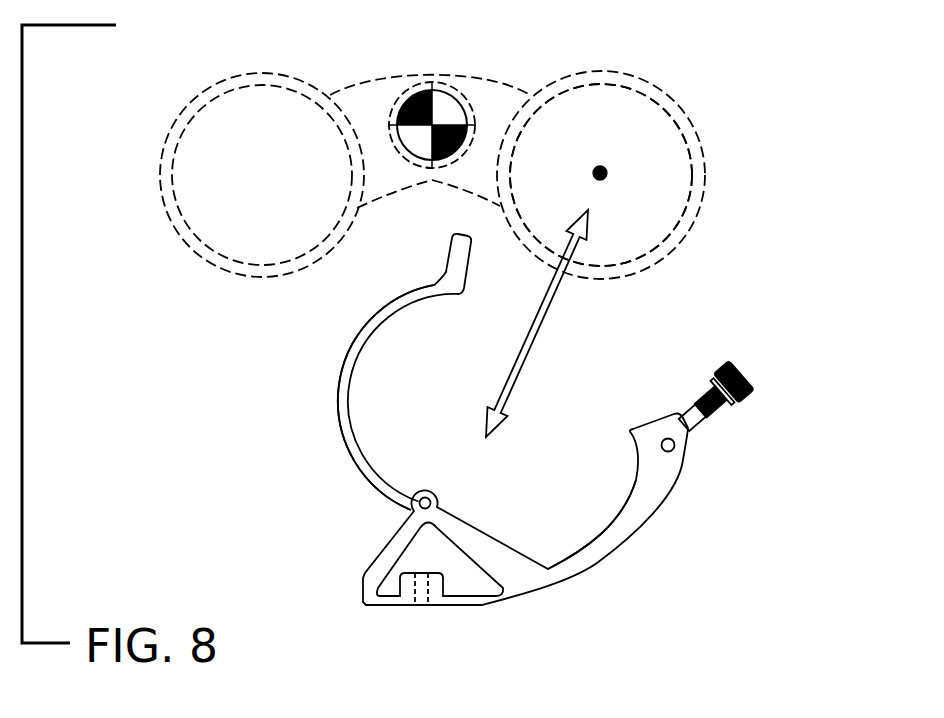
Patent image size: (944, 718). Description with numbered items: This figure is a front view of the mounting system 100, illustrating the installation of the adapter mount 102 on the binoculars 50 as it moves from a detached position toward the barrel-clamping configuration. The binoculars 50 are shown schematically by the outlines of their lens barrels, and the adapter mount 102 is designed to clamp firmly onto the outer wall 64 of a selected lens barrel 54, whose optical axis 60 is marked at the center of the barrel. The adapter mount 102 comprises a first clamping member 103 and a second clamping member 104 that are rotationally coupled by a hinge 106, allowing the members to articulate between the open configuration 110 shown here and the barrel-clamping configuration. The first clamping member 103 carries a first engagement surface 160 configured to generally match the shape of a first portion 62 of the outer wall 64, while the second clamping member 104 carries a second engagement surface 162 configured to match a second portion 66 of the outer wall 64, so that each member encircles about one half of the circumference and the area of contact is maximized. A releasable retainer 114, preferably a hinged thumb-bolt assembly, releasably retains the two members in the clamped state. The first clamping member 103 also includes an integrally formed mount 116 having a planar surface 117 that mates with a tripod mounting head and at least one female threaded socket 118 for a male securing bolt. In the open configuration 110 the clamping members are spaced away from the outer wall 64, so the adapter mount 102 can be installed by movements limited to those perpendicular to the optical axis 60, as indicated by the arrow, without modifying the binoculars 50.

The binoculars 50 is at (205, 90).
The lens barrel 54 is at (702, 205).
The optical axis 60 is at (594, 173).
The first portion 62 is at (655, 262).
The outer wall 64 is at (641, 88).
The second portion 66 is at (590, 73).
The mounting assembly 100 is at (693, 552).
The adapter mount 102 is at (693, 515).
The first clamping member 103 is at (543, 588).
The second clamping member 104 is at (338, 382).
The hinge 106 is at (412, 502).
The open configuration 110 is at (310, 451).
The releasable retainer 114 is at (733, 423).
The mount 116 is at (463, 612).
The planar surface 117 is at (383, 608).
The female threaded socket 118 is at (423, 608).
The first engagement surface 160 is at (592, 547).
The second engagement surface 162 is at (370, 325).